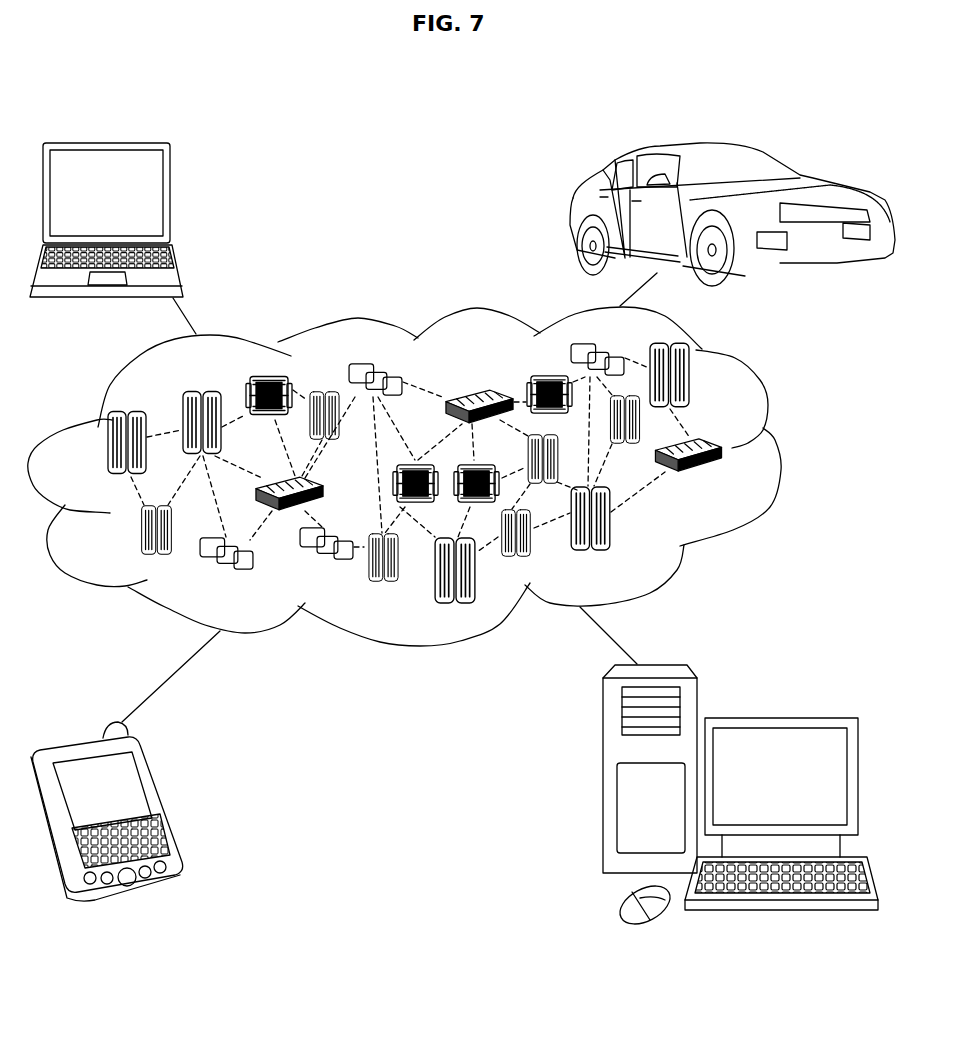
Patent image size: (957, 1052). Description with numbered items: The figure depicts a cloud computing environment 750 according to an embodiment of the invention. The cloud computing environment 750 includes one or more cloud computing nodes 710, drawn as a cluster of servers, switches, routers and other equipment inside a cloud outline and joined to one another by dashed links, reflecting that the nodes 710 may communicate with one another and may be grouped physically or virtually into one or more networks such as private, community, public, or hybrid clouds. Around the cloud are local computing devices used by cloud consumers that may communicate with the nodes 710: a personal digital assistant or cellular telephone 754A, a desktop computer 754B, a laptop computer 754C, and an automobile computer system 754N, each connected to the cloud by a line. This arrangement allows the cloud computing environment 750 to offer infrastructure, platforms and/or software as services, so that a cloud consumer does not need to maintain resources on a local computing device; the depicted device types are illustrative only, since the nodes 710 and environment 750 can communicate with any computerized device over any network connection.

The cloud computing nodes 710 is at (722, 479).
The cloud computing environment 750 is at (778, 452).
The personal digital assistant (PDA) or cellular telephone 754A is at (163, 802).
The desktop computer 754B is at (780, 712).
The laptop computer 754C is at (171, 203).
The automobile computer system 754N is at (575, 216).